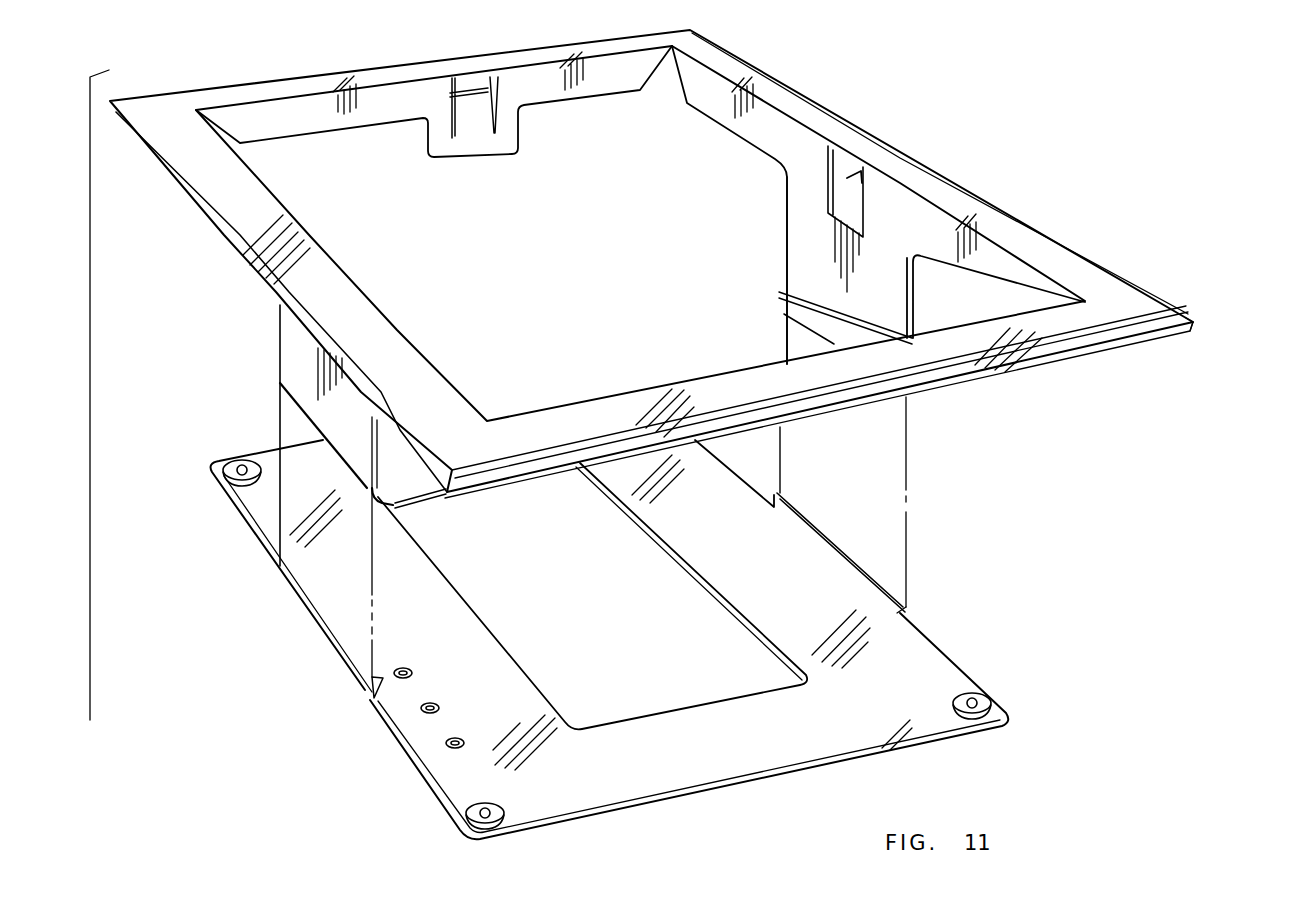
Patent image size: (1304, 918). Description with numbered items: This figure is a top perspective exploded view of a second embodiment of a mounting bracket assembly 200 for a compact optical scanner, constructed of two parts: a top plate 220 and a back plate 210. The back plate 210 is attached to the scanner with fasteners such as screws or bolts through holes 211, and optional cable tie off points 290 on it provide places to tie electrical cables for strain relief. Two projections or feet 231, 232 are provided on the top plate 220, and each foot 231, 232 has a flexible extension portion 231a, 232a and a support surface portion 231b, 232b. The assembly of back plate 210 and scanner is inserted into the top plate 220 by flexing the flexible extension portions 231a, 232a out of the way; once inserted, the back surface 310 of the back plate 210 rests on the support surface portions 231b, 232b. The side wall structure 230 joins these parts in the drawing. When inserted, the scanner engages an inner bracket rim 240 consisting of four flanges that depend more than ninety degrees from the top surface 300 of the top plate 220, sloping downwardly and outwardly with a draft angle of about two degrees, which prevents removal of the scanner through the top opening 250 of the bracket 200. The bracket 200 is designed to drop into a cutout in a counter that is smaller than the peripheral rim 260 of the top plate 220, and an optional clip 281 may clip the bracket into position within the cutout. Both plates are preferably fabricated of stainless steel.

The mounting bracket assembly 200 is at (953, 160).
The back plate 210 is at (940, 650).
The holes 211 is at (240, 466).
The top plate 220 is at (1027, 222).
The side wall 230 is at (278, 348).
The foot 231 is at (785, 263).
The flexible extension portion 231a is at (913, 298).
The support surface portion 231b is at (783, 294).
The foot 232 is at (848, 176).
The flexible extension portion 232a is at (367, 497).
The support surface portion 232b is at (395, 505).
The inner bracket rim 240 is at (543, 92).
The top opening 250 is at (673, 146).
The peripheral rim 260 is at (1195, 322).
The clip 281 is at (478, 88).
The cable tie off points 290 is at (463, 740).
The top surface 300 is at (1090, 283).
The back surface 310 is at (373, 707).